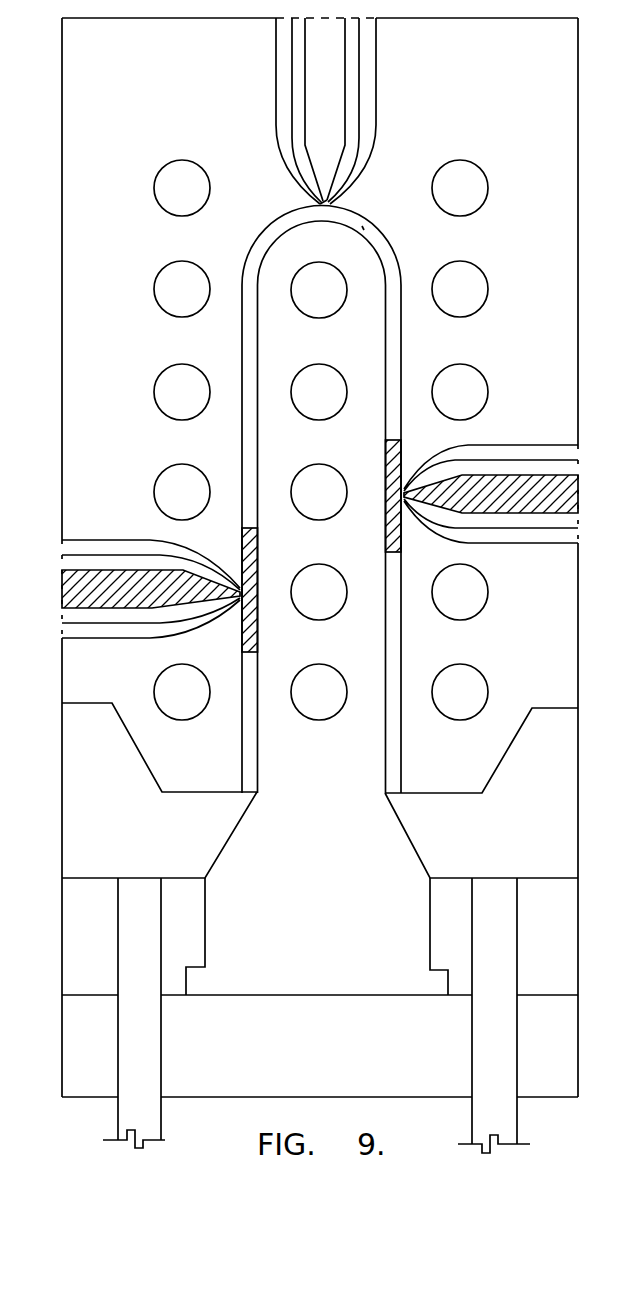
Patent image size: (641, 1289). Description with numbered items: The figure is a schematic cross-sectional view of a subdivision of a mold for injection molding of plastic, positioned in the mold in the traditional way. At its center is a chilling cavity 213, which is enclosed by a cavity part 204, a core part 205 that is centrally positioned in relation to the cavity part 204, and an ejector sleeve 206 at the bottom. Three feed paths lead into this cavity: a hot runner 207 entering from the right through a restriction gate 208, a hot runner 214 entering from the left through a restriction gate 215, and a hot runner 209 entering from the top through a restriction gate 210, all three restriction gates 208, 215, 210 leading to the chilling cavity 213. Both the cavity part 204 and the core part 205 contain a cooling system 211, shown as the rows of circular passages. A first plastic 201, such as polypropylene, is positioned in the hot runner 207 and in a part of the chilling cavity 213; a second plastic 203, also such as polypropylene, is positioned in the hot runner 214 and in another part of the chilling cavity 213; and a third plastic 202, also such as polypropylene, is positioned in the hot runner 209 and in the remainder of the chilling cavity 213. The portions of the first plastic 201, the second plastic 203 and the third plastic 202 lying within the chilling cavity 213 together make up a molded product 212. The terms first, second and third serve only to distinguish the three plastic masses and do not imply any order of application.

The first plastic 201 is at (488, 497).
The third plastic 202 is at (362, 228).
The second plastic 203 is at (248, 562).
The cavity part 204 is at (320, 557).
The core part 205 is at (319, 441).
The ejector sleeve 206 is at (320, 928).
The hot runner 207 is at (480, 513).
The restriction gate 208 is at (403, 498).
The hot runner 209 is at (305, 90).
The restriction gate 210 is at (318, 203).
The cooling system 211 is at (453, 697).
The molded product 212 is at (388, 748).
The chilling cavity 213 is at (401, 338).
The hot runner 214 is at (153, 612).
The restriction gate 215 is at (237, 600).